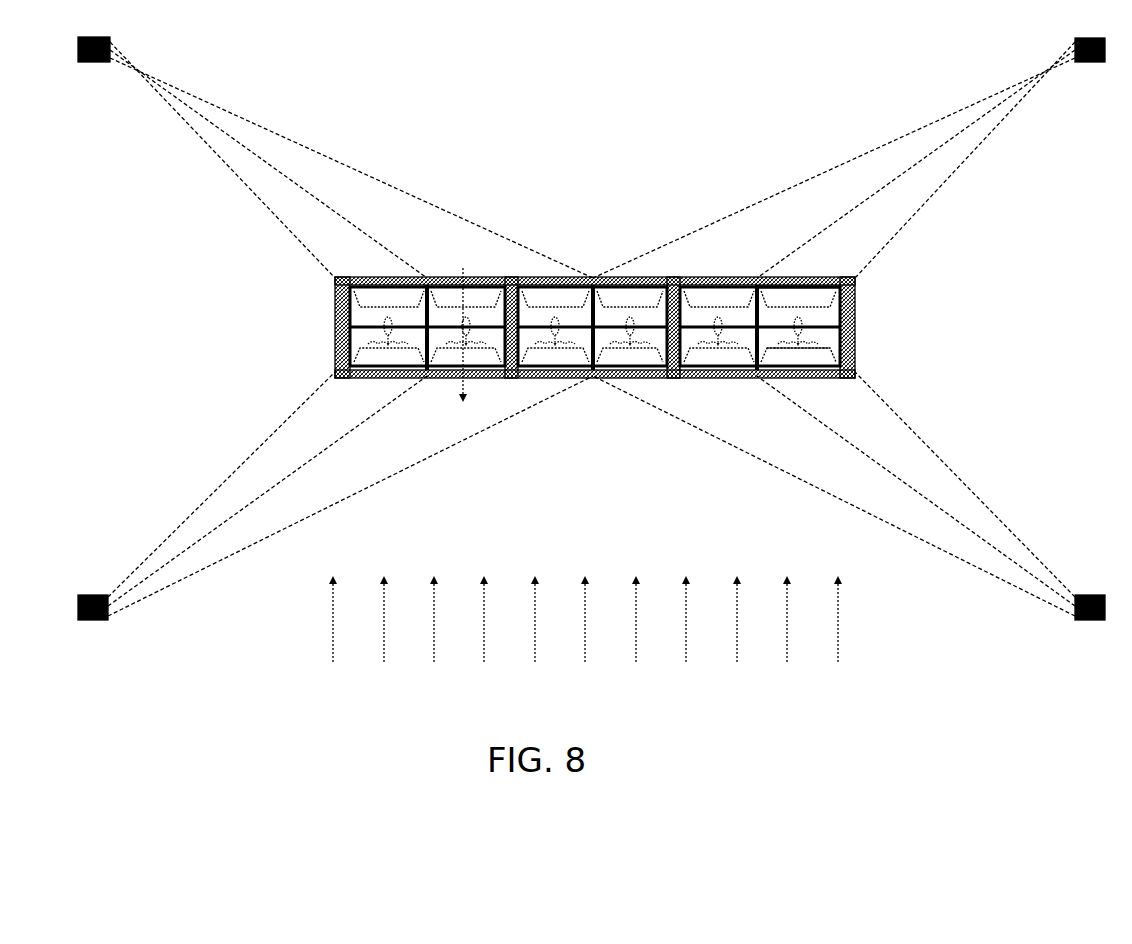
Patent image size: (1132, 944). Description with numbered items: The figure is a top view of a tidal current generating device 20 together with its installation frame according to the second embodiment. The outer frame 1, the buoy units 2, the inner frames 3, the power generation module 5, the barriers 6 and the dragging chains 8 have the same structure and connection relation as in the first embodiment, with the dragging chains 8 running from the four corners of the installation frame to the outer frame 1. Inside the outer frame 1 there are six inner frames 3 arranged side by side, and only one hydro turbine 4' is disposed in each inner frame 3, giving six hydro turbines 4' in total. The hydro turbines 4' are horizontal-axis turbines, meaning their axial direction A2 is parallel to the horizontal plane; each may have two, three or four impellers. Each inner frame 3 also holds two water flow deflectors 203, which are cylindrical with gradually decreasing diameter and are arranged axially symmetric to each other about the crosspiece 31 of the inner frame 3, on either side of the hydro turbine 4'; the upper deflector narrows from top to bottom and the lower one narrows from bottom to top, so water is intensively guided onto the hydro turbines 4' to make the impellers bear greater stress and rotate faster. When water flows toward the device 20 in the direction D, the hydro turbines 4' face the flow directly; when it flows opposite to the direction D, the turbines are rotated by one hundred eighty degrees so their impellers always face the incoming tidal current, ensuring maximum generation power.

The dragging chain 8 is at (152, 104).
The tidal current generating device 20 is at (603, 230).
The outer frame 1 is at (335, 370).
The buoy units 2 is at (334, 282).
The inner frame 3 is at (335, 305).
The crosspiece 31 is at (335, 325).
The water flow deflector 203 is at (335, 355).
The power generation module 5 is at (855, 327).
The barriers 6 is at (855, 287).
The hydro turbine 4' is at (869, 345).
The axial direction A2 is at (447, 355).
The direction D is at (585, 621).